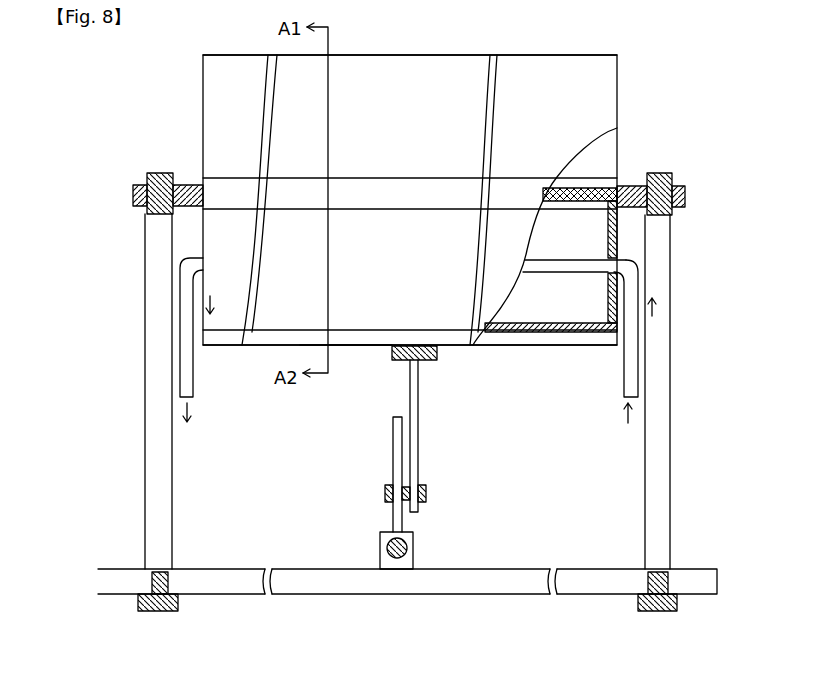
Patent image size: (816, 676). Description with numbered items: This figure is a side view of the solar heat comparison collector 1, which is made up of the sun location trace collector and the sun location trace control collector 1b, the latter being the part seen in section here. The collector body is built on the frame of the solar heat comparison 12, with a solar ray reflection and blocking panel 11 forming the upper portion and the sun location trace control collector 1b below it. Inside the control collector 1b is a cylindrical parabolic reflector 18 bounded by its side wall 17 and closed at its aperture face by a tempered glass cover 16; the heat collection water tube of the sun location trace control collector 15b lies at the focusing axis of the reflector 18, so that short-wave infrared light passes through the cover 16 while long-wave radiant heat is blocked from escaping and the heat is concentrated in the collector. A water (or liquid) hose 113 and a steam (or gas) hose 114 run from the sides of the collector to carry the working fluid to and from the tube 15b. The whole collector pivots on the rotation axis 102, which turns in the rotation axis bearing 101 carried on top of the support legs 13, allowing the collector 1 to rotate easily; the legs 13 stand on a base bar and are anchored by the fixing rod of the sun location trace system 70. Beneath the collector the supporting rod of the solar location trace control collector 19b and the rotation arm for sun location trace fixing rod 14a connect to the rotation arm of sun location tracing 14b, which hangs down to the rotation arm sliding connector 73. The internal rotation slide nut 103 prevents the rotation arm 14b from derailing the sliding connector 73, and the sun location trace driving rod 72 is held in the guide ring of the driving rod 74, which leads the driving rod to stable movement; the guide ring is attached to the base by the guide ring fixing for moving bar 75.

The solar heat comparison collector 1 is at (617, 83).
The solar ray reflection and blocking panel 11 is at (410, 89).
The frame of the solar heat comparison 12 is at (410, 193).
The sun location trace control collector 1b is at (410, 304).
The solar heat or photovoltaic collector support legs 13 is at (683, 445).
The rotation arm for sun location trace fixing rod 14a is at (438, 356).
The rotation arm of sun location tracing 14b is at (419, 426).
The heat collection water tube of the sun location trace control collector 15b is at (580, 264).
The tempered glass cover of cylindrical parabolic reflector 16 is at (584, 188).
The side wall of cylindrical parabolic reflector 17 is at (608, 236).
The cylindrical parabolic reflector 18 is at (586, 333).
The supporting rod of the solar location trace control collector 19b is at (356, 348).
The fixing rod of the sun location trace system 70 is at (178, 606).
The sun location trace driving rod 72 is at (413, 548).
The rotation arm sliding connector 73 is at (393, 453).
The guide ring of the driving rod 74 is at (380, 548).
The guide ring fixing for moving bar 75 is at (525, 569).
The rotation axis bearing for solar-heat or photovoltaic collector 101 is at (660, 173).
The rotation axis solar heat or photovoltaic collector 102 is at (703, 197).
The internal rotation slide nut 103 is at (426, 493).
The water (or liquid) hose 113 is at (625, 385).
The steam (or gas) hose 114 is at (190, 377).